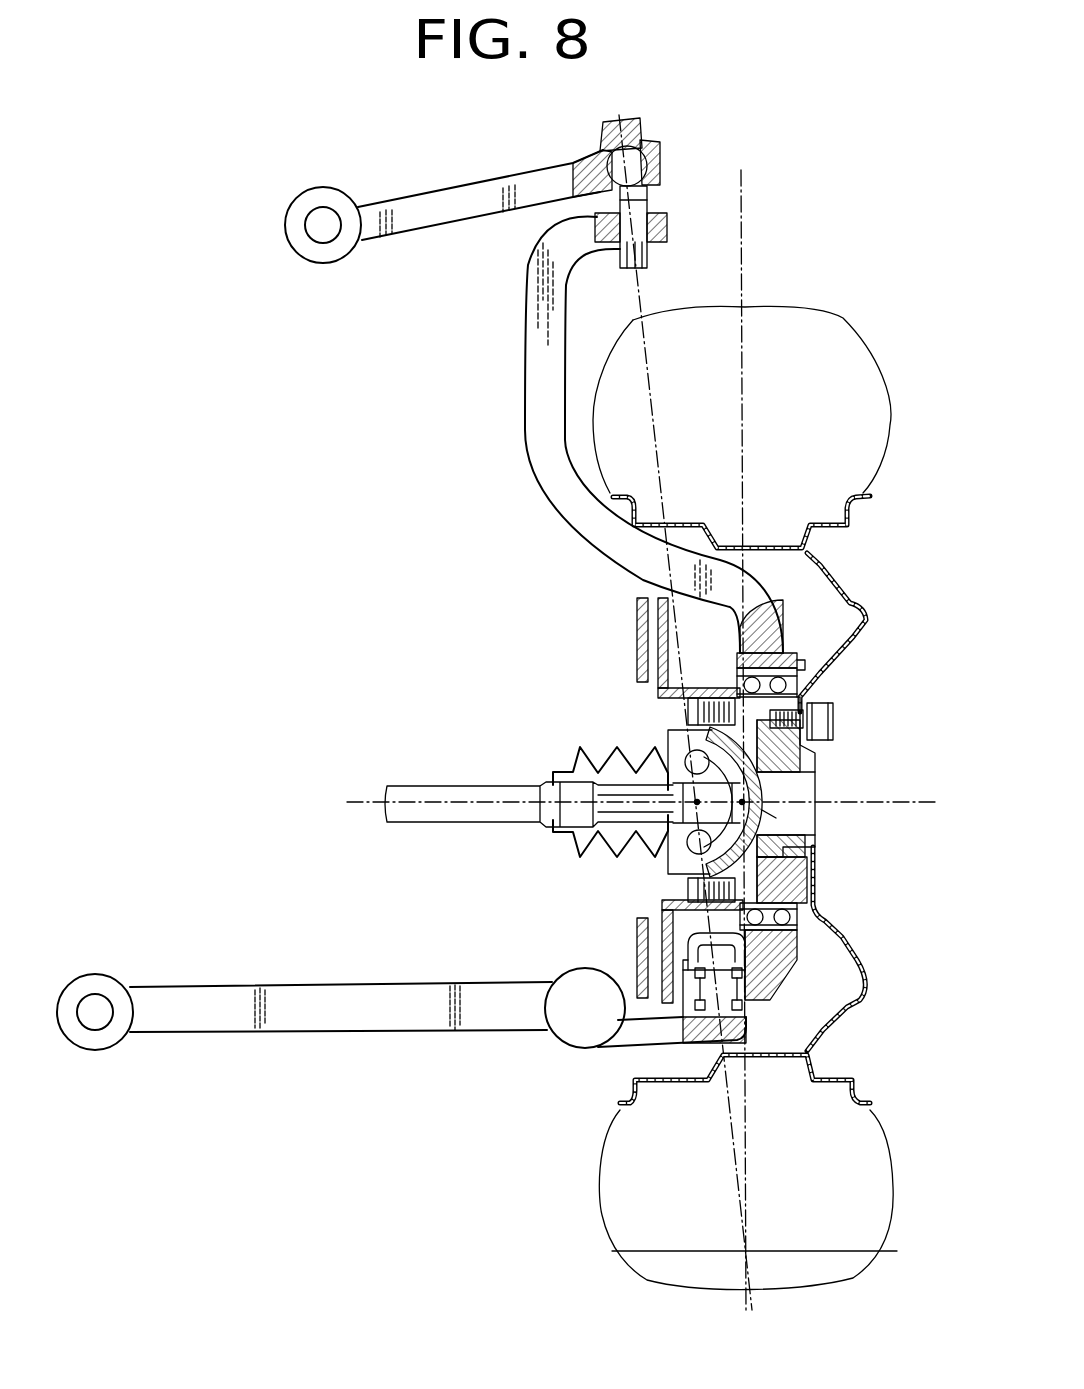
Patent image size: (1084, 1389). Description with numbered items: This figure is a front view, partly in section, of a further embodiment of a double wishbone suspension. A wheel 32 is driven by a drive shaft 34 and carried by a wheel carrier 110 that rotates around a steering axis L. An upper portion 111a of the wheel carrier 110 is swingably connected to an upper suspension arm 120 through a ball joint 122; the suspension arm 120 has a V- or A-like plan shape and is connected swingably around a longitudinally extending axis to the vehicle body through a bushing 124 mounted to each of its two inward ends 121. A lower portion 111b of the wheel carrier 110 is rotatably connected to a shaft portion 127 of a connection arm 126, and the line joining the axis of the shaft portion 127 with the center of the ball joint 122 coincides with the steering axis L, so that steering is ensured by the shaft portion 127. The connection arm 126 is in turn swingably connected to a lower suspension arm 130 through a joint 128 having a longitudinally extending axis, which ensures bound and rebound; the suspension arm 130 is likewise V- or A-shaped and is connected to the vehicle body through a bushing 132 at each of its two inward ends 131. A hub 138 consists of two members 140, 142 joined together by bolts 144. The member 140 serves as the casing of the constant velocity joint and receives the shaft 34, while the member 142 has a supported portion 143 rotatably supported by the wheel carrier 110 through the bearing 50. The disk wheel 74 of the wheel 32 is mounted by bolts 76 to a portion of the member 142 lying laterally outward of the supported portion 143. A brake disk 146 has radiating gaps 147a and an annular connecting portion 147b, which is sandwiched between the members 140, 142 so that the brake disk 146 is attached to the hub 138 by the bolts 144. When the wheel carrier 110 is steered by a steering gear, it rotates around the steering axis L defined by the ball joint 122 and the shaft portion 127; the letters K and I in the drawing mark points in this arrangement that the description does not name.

The wheel 32 is at (813, 557).
The drive shaft 34 is at (463, 785).
The bearing 50 is at (770, 667).
The disk wheel 74 is at (860, 610).
The bolts 76 is at (833, 720).
The wheel carrier 110 is at (770, 607).
The upper portion of the wheel carrier 111a is at (568, 237).
The lower portion of the wheel carrier 111b is at (773, 962).
The upper suspension arm 120 is at (467, 180).
The inward ends 121 is at (295, 202).
The ball joint 122 is at (663, 145).
The bushing 124 is at (330, 253).
The connection arm 126 is at (617, 1052).
The shaft portion 127 is at (747, 987).
The joint 128 is at (563, 1045).
The suspension arm 130 is at (320, 1032).
The inward ends 131 is at (110, 1048).
The bushing 132 is at (105, 982).
The hub 138 is at (803, 703).
The member 140 is at (667, 733).
The member 142 is at (817, 777).
The supported portion 143 is at (807, 670).
The bolts 144 is at (687, 708).
The brake disk 146 is at (637, 620).
The radiating gaps 147a is at (657, 595).
The annular connecting portion 147b is at (710, 687).
The steering axis L is at (657, 418).
The joint center K is at (673, 830).
The intersection point I is at (773, 822).